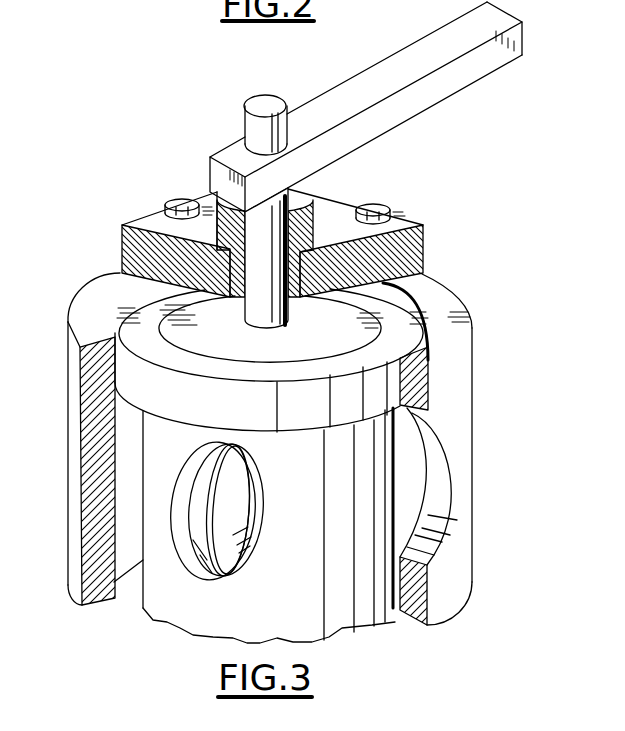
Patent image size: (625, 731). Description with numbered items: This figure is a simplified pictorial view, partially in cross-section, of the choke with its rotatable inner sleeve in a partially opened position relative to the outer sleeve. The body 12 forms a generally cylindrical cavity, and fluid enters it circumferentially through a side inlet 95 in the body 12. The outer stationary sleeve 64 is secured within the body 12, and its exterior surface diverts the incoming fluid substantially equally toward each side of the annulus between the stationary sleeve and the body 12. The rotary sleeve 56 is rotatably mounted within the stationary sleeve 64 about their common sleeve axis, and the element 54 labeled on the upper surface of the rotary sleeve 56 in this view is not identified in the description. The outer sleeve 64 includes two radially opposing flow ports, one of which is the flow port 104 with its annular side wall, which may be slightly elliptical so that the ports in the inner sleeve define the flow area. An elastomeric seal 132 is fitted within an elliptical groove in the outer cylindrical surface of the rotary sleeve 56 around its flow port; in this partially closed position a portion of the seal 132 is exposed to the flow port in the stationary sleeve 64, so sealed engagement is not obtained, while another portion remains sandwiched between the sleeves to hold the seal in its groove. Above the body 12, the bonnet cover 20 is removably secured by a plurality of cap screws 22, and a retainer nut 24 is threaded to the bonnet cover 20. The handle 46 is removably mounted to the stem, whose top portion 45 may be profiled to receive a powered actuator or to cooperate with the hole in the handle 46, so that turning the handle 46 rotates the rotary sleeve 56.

The body 12 is at (422, 293).
The bonnet cover 20 is at (133, 246).
The cap screws 22 is at (182, 205).
The retainer nut 24 is at (300, 208).
The top portion of the stem 45 is at (267, 104).
The handle 46 is at (464, 33).
The top surface of plug 54 is at (238, 346).
The rotary sleeve 56 is at (205, 540).
The outer stationary sleeve 64 is at (186, 400).
The side inlet 95 is at (442, 487).
The flow port 104 is at (243, 512).
The elastomeric seal 132 is at (208, 535).